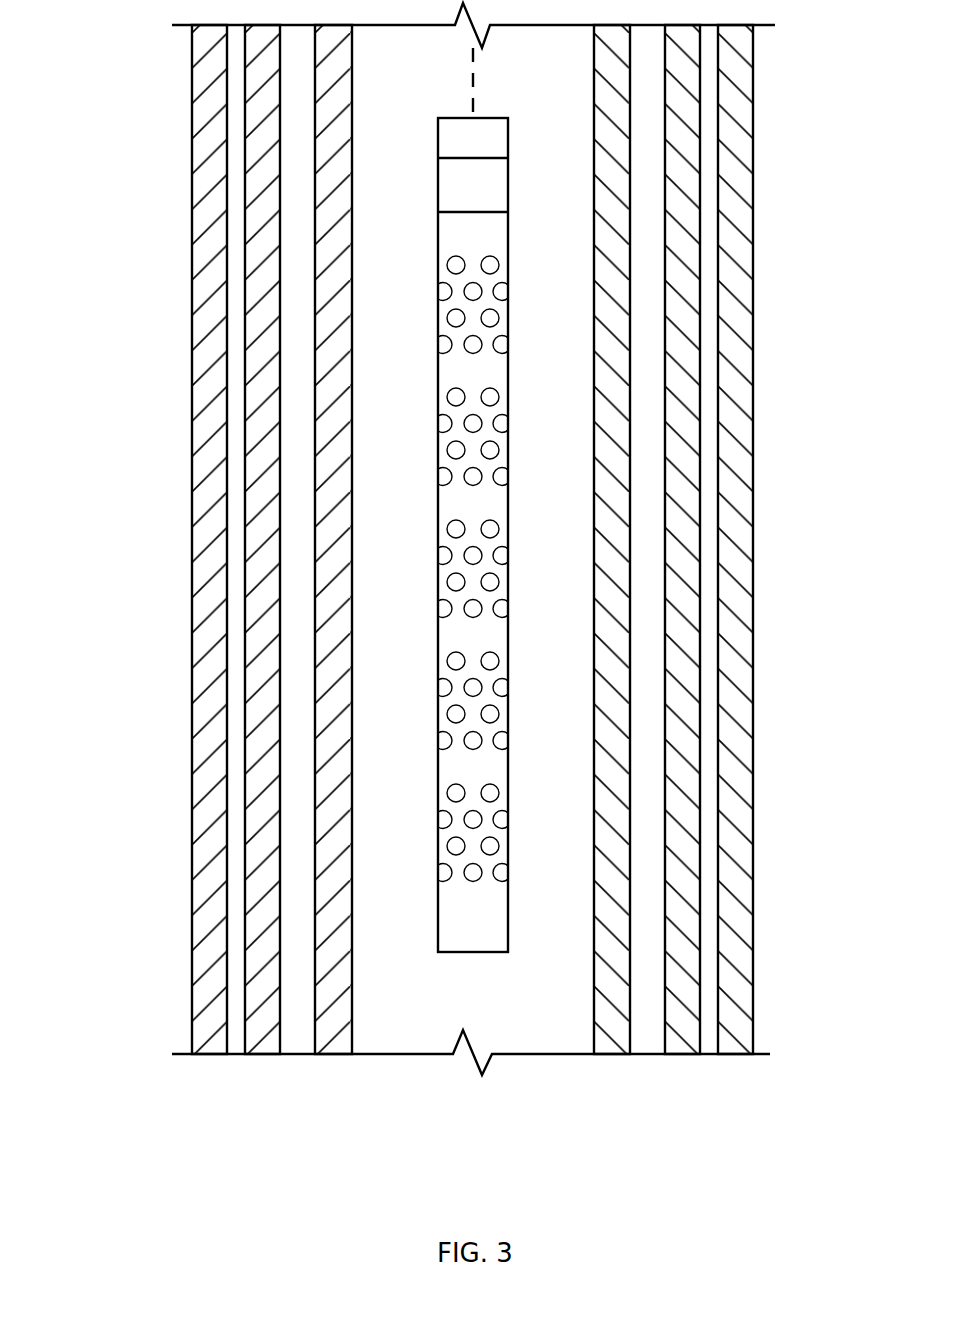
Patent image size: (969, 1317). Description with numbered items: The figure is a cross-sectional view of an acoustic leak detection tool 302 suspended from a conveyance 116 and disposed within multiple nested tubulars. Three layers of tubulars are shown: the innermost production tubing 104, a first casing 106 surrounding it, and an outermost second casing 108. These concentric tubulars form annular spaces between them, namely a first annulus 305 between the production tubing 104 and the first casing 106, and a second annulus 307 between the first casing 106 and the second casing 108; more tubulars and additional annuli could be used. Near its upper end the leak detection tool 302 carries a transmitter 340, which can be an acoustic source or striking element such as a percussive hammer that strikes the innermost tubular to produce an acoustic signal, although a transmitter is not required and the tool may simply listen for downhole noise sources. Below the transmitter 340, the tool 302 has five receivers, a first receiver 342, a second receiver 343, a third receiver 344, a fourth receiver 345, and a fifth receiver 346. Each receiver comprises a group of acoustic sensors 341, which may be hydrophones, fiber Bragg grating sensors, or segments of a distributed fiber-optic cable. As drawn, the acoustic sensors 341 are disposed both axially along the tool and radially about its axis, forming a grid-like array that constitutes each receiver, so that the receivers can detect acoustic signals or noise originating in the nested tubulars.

The production tubing 104 is at (315, 363).
The first casing 106 is at (245, 624).
The second casing 108 is at (192, 240).
The conveyance 116 is at (468, 62).
The acoustic leak detection tool 302 is at (468, 952).
The first annulus 305 is at (298, 508).
The second annulus 307 is at (240, 765).
The transmitter 340 is at (509, 193).
The acoustic sensors 341 is at (447, 318).
The first receiver 342 is at (517, 255).
The second receiver 343 is at (517, 387).
The third receiver 344 is at (517, 519).
The fourth receiver 345 is at (517, 651).
The fifth receiver 346 is at (517, 783).